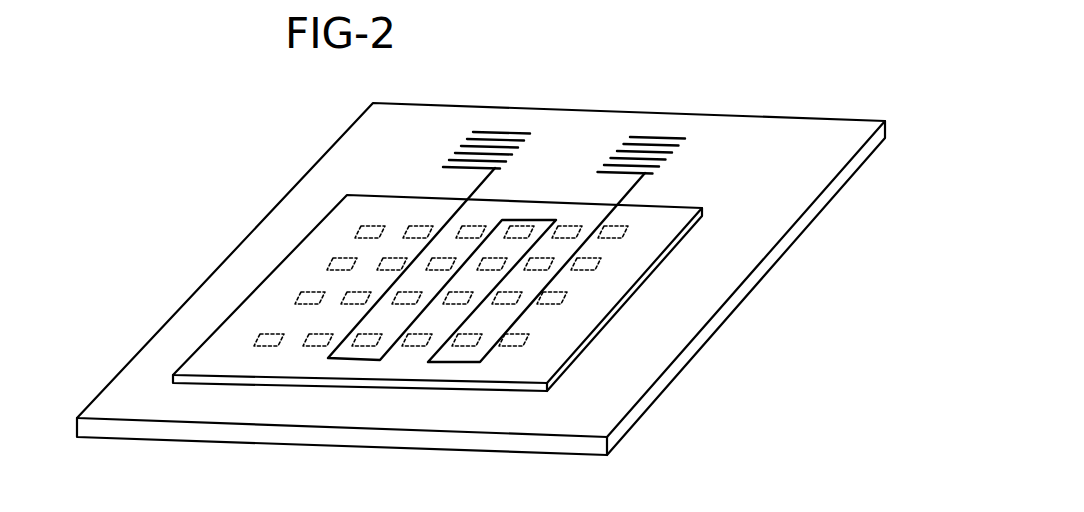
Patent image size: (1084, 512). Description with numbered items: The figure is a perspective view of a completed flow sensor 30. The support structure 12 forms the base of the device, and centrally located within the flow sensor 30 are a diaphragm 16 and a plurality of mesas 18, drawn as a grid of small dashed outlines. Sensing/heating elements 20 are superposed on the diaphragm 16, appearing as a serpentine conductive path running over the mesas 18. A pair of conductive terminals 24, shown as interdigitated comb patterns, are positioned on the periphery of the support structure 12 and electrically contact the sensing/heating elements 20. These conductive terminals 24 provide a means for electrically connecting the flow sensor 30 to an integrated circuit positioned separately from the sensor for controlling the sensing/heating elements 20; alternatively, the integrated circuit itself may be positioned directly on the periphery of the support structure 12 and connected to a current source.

The support structure 12 is at (813, 215).
The diaphragm 16 is at (672, 217).
The mesas 18 is at (358, 230).
The sensing/heating elements 20 is at (523, 220).
The conductive terminals 24 is at (627, 143).
The flow sensor 30 is at (642, 90).